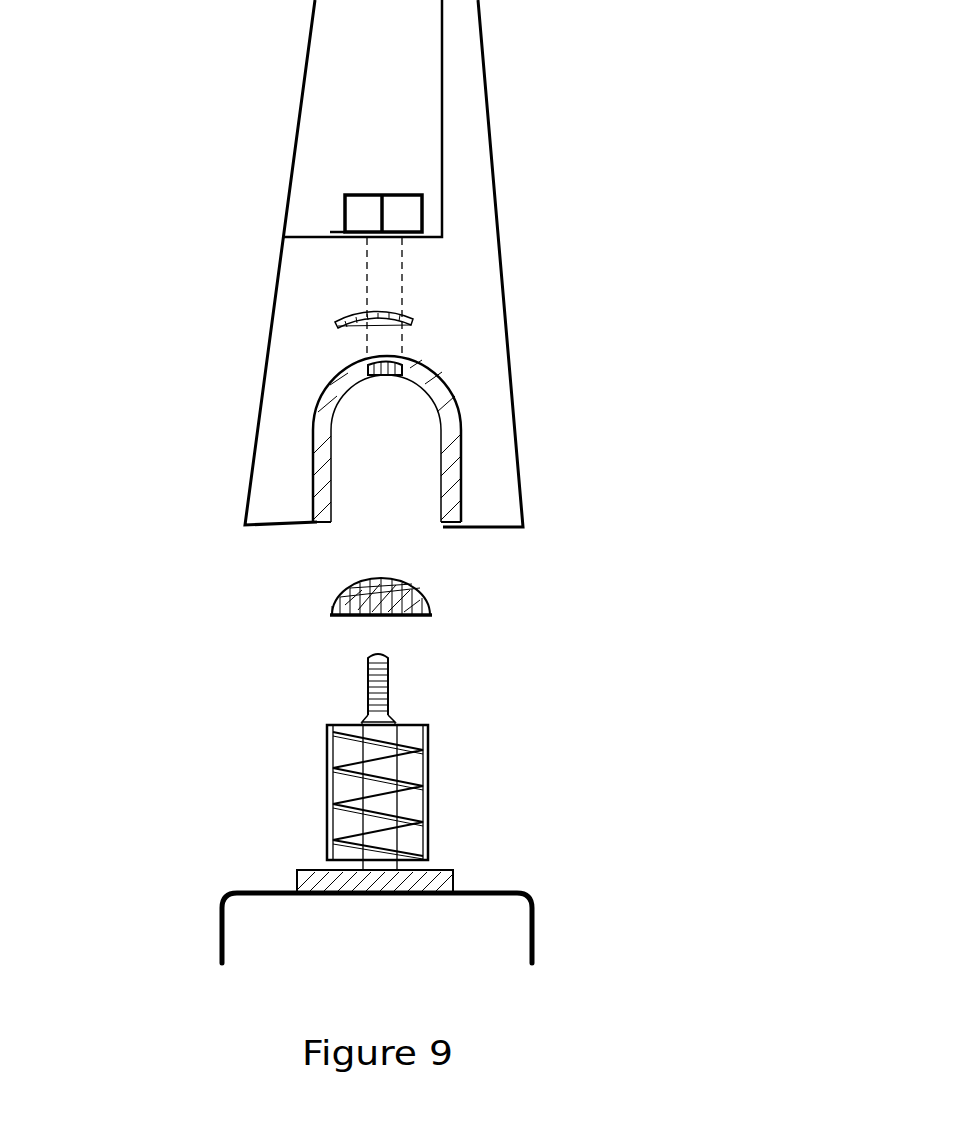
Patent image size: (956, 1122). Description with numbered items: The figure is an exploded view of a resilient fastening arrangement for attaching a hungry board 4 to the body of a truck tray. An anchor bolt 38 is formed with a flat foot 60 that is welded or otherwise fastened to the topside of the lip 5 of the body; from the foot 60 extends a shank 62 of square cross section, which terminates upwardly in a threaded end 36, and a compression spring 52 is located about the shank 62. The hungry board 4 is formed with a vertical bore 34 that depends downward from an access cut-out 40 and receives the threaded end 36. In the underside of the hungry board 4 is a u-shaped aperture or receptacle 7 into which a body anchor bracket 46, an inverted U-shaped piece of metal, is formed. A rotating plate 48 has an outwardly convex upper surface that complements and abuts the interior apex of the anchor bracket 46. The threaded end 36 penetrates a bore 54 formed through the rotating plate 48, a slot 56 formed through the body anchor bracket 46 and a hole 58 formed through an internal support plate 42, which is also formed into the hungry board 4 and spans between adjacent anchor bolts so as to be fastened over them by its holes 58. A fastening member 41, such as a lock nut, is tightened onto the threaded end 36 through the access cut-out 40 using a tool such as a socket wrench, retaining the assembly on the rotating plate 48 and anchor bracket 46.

The hungry board 4 is at (409, 263).
The lip 5 is at (532, 917).
The u-shaped aperture or receptacle 7 is at (463, 452).
The vertical bore 34 is at (378, 272).
The threaded end 36 is at (387, 678).
The anchor bolt 38 is at (430, 760).
The access cut-out 40 is at (343, 112).
The fastening member 41 is at (342, 208).
The internal support plate 42 is at (345, 315).
The body anchor bracket 46 is at (445, 383).
The rotating plate 48 is at (423, 593).
The compression spring 52 is at (427, 817).
The bore 54 is at (350, 590).
The slot 56 is at (393, 358).
The hole 58 is at (370, 312).
The flat foot 60 is at (453, 872).
The shank 62 is at (330, 785).